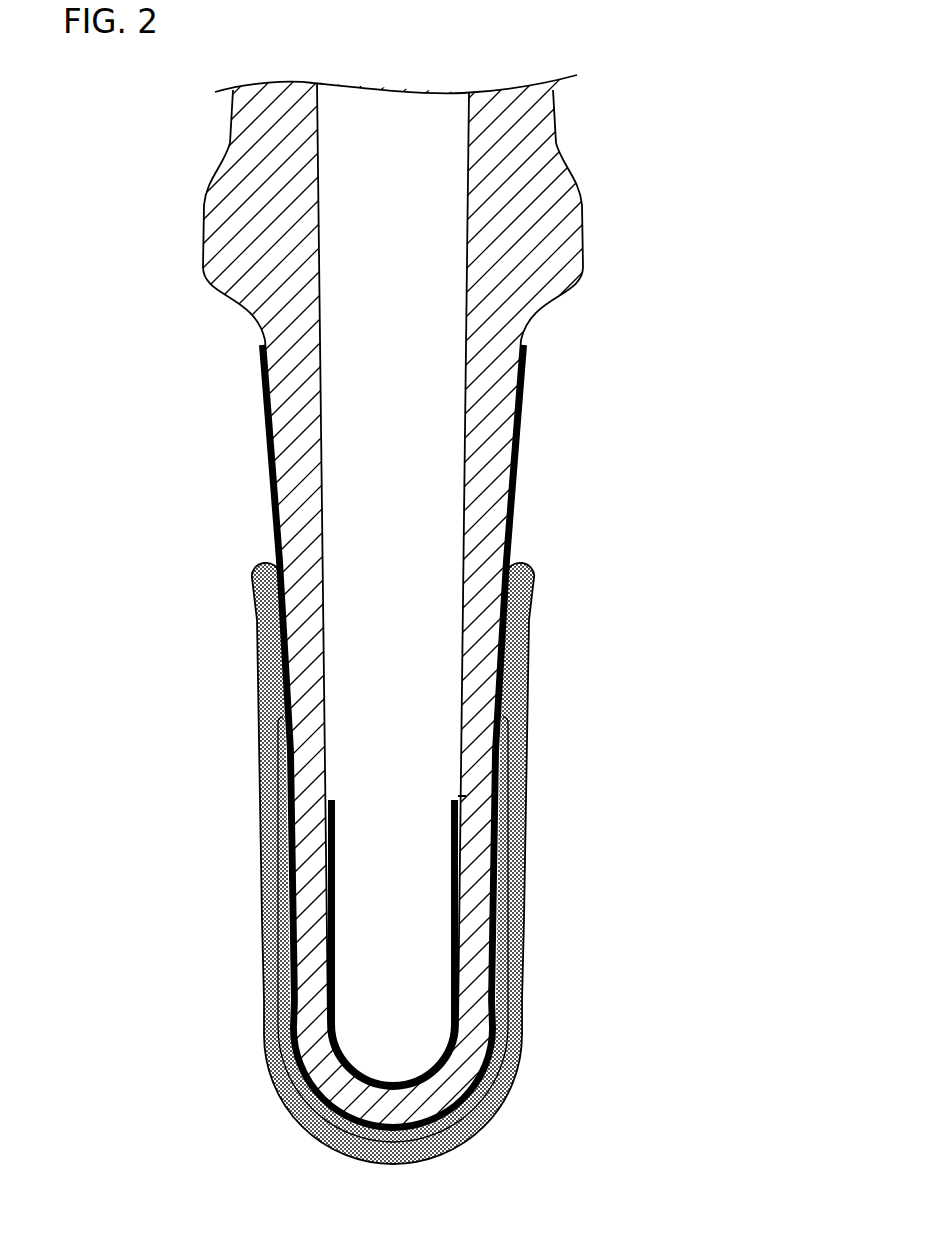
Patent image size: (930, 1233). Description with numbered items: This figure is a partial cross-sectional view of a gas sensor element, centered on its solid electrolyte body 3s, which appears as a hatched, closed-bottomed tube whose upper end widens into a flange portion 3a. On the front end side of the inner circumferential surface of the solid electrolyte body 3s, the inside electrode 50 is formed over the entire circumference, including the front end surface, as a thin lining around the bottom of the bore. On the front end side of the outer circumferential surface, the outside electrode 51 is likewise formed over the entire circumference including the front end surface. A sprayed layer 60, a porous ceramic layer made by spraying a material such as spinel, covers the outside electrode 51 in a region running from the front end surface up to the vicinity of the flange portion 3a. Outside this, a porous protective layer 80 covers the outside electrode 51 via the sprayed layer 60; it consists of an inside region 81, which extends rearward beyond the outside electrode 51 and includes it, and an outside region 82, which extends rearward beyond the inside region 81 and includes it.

The solid electrolyte body 3s is at (523, 128).
The flange portion 3a is at (565, 242).
The sprayed layer 60 is at (270, 458).
The inside electrode 50 is at (457, 887).
The outside electrode 51 is at (462, 785).
The porous protective layer 80 is at (350, 863).
The inside region 81 is at (267, 1028).
The outside region 82 is at (270, 982).